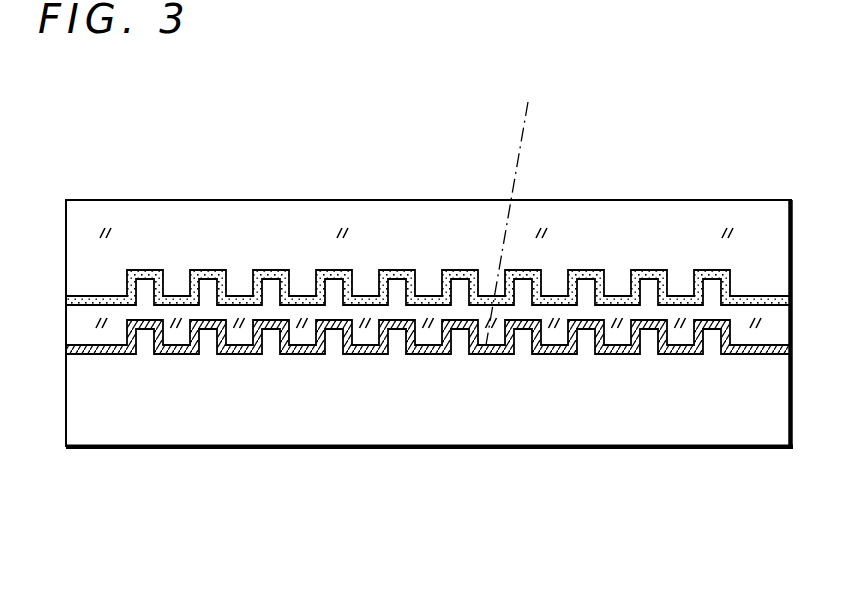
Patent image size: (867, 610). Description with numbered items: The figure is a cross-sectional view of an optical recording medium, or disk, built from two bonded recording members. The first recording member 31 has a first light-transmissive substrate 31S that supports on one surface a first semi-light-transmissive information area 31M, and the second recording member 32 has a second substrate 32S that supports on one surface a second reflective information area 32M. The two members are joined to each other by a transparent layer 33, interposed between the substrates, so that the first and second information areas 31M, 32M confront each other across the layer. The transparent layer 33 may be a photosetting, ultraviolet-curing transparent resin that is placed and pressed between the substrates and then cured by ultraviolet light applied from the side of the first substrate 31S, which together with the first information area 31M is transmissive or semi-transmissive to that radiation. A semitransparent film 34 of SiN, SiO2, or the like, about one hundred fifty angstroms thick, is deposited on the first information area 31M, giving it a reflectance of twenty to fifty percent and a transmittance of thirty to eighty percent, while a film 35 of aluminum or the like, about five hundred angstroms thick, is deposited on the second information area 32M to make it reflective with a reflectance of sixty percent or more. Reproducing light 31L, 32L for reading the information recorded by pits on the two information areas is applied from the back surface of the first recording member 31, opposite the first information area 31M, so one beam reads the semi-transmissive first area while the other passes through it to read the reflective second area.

The first recording member 31 is at (679, 54).
The first light-transmissive substrate 31S is at (562, 217).
The first semi-light-transmissive information area 31M is at (627, 297).
The reproducing light 31L is at (333, 107).
The second recording member 32 is at (644, 467).
The second substrate 32S is at (590, 428).
The second reflective information area 32M is at (546, 350).
The reproducing light 32L is at (486, 345).
The transparent layer 33 is at (770, 333).
The semitransparent film 34 is at (433, 305).
The film 35 is at (365, 355).